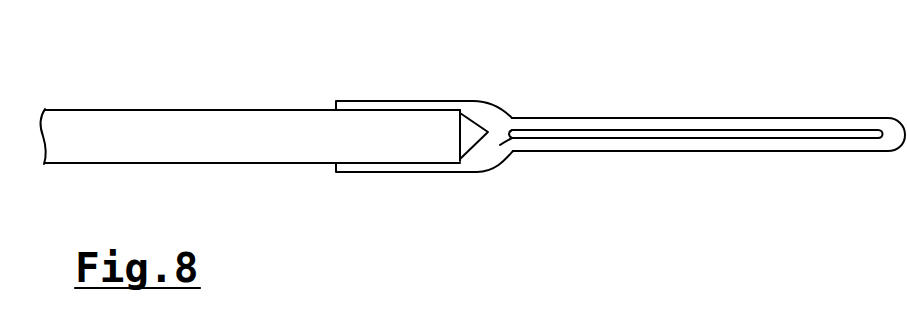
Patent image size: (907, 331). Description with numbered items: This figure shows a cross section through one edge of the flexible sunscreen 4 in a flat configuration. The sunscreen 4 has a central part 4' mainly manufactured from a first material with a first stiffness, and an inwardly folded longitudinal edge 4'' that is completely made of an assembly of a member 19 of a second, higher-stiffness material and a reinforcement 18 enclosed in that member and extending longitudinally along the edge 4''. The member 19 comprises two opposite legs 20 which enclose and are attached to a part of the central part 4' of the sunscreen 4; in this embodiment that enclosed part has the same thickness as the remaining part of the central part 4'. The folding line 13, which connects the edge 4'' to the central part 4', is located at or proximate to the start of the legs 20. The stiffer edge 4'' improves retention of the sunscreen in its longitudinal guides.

The flexible sunscreen 4 is at (266, 89).
The central part 4' is at (103, 90).
The inwardly folded longitudinal edge 4'' is at (708, 84).
The folding line 13 is at (501, 150).
The reinforcement 18 is at (722, 138).
The member 19 is at (493, 122).
The legs 20 is at (373, 170).